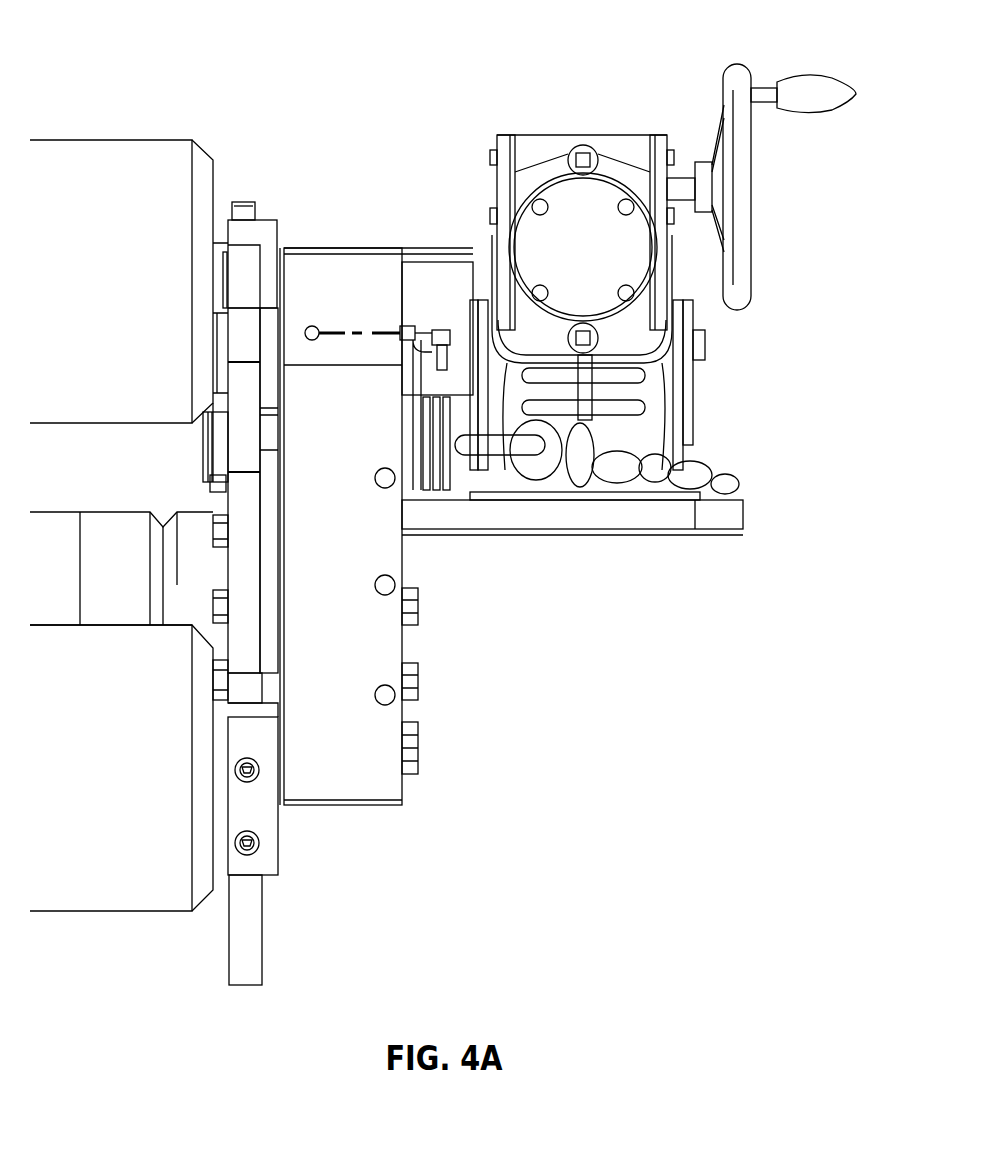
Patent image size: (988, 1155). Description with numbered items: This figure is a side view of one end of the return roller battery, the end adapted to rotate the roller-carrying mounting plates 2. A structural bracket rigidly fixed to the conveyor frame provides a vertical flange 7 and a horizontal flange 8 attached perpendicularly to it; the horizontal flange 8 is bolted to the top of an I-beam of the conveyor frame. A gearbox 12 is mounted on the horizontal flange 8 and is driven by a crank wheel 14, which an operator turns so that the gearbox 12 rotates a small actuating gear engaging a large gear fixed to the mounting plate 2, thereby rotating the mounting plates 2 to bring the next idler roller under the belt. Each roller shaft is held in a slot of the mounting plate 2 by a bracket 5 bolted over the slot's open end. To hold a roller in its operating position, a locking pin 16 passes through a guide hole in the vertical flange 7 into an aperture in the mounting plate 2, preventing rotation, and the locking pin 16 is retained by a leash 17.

The mounting plate 2 is at (244, 937).
The bracket 5 is at (260, 807).
The vertical flange 7 is at (405, 785).
The horizontal flange 8 is at (652, 515).
The gearbox 12 is at (535, 177).
The crank wheel 14 is at (748, 215).
The locking pin 16 is at (272, 452).
The leash 17 is at (378, 332).